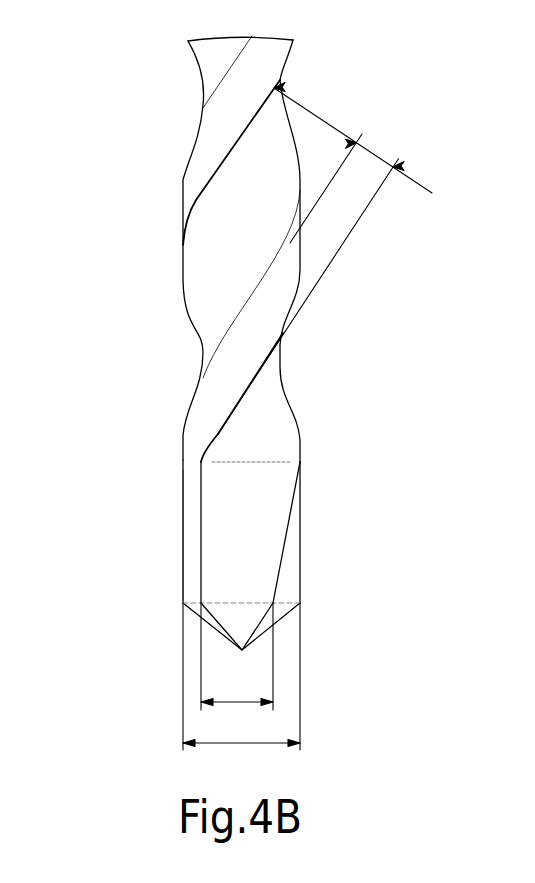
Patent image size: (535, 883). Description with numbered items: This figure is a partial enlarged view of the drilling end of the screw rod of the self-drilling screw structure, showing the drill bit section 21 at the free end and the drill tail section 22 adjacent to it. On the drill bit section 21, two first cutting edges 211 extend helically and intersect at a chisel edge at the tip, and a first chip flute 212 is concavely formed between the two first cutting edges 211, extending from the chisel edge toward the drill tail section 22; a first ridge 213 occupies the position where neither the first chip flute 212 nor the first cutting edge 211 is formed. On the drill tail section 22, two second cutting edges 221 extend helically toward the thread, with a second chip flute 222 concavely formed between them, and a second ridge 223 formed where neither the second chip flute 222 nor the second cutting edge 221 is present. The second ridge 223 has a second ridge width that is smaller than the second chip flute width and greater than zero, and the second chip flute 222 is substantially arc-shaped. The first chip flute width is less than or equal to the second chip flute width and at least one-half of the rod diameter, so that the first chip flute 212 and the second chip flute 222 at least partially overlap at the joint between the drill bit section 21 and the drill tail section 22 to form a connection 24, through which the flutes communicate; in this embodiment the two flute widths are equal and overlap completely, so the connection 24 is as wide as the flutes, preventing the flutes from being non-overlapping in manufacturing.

The drill bit section 21 is at (302, 565).
The drill tail section 22 is at (203, 76).
The connection 24 is at (262, 462).
The first cutting edge 211 is at (200, 533).
The first chip flute 212 is at (262, 513).
The first ridge 213 is at (192, 568).
The second cutting edge 221 is at (220, 347).
The second chip flute 222 is at (210, 293).
The second ridge 223 is at (202, 156).